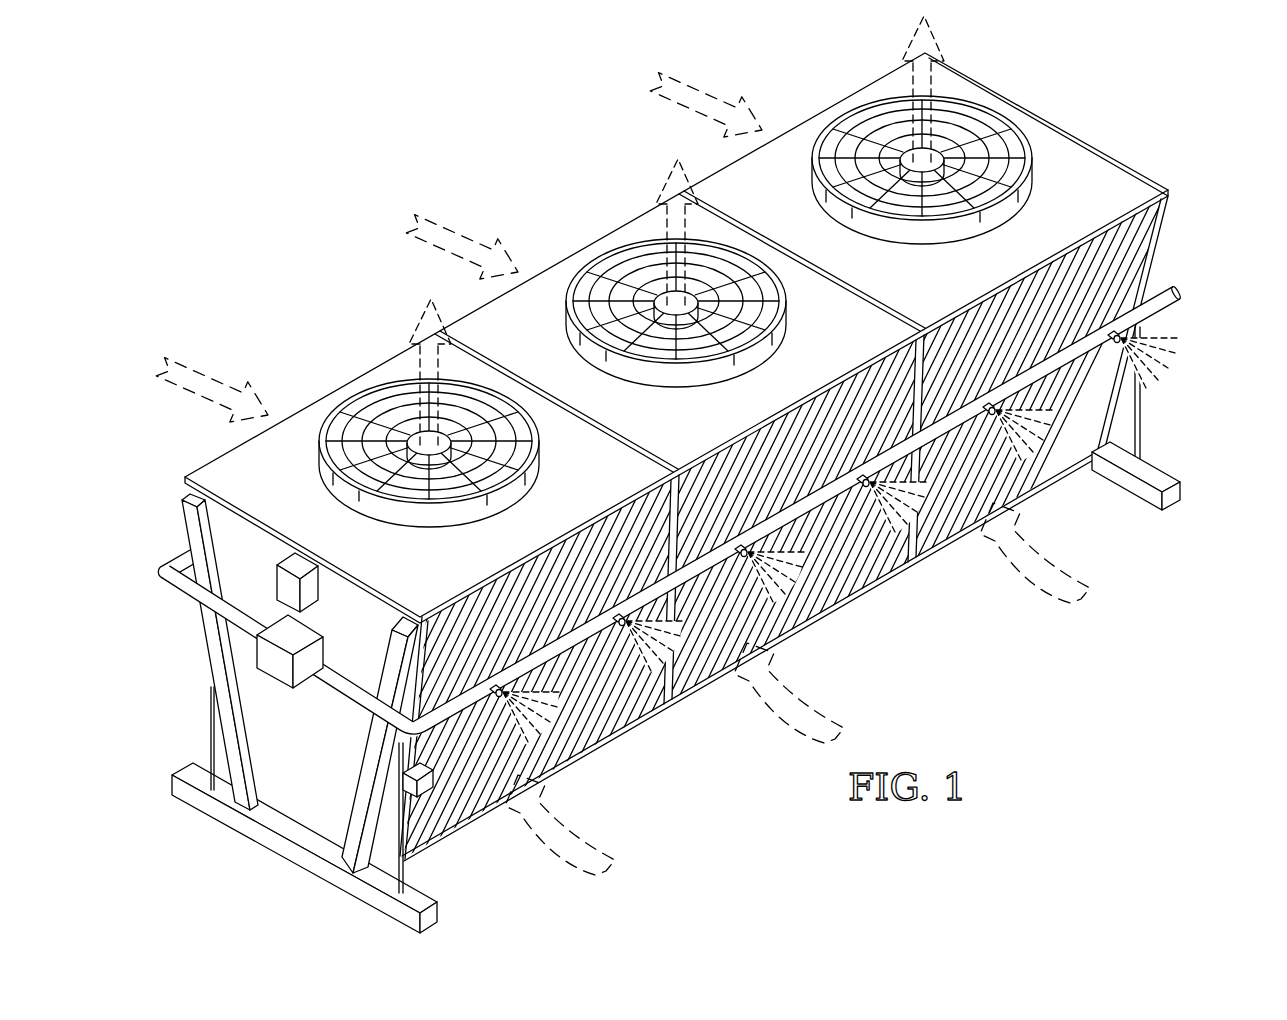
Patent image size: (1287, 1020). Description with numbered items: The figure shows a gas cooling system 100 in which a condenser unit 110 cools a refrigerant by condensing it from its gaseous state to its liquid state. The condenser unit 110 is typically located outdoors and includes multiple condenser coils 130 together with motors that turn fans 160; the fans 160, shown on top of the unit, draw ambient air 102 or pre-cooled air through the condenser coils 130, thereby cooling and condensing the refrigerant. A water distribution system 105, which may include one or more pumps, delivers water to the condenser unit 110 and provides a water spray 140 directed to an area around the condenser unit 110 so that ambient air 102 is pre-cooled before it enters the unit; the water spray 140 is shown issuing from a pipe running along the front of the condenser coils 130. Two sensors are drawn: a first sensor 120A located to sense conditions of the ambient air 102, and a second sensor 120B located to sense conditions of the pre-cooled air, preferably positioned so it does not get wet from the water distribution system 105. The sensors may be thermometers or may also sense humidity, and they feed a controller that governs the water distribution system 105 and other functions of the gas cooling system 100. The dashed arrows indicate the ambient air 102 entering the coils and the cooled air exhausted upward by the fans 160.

The gas cooling system 100 is at (482, 141).
The ambient air 102 is at (208, 372).
The water distribution system 105 is at (272, 684).
The condenser unit 110 is at (216, 657).
The first sensor 120A is at (312, 588).
The second sensor 120B is at (406, 780).
The condenser coils 130 is at (1110, 431).
The water spray 140 is at (1188, 351).
The fan 160 is at (388, 418).